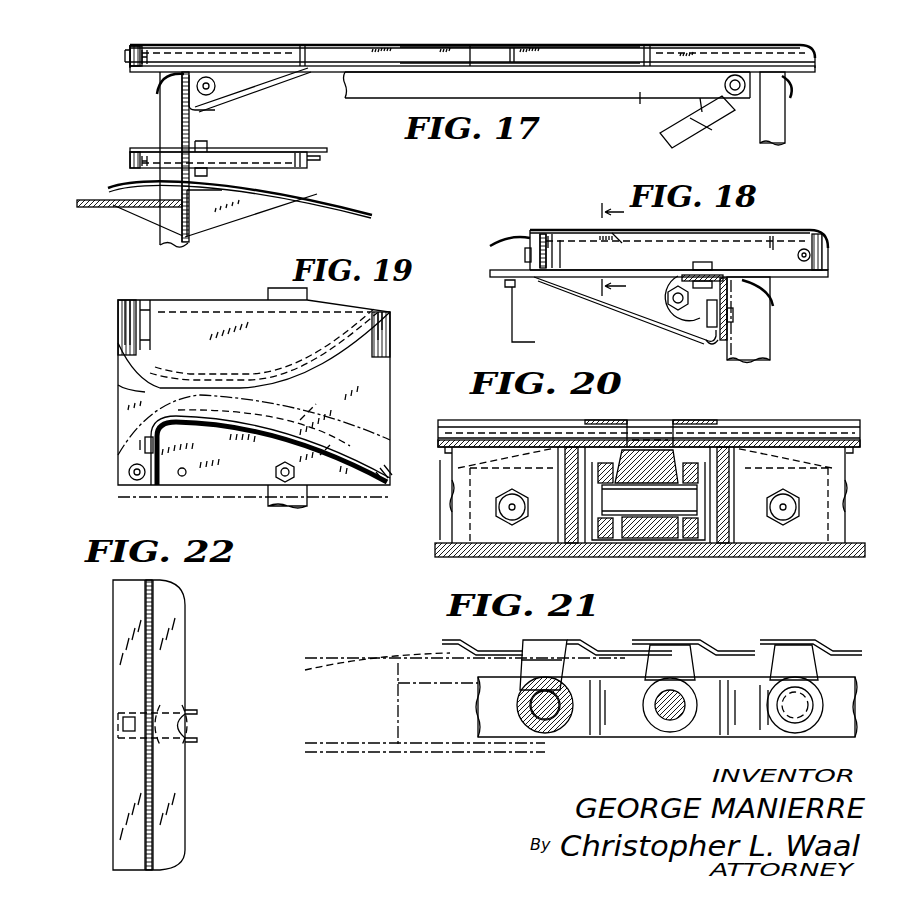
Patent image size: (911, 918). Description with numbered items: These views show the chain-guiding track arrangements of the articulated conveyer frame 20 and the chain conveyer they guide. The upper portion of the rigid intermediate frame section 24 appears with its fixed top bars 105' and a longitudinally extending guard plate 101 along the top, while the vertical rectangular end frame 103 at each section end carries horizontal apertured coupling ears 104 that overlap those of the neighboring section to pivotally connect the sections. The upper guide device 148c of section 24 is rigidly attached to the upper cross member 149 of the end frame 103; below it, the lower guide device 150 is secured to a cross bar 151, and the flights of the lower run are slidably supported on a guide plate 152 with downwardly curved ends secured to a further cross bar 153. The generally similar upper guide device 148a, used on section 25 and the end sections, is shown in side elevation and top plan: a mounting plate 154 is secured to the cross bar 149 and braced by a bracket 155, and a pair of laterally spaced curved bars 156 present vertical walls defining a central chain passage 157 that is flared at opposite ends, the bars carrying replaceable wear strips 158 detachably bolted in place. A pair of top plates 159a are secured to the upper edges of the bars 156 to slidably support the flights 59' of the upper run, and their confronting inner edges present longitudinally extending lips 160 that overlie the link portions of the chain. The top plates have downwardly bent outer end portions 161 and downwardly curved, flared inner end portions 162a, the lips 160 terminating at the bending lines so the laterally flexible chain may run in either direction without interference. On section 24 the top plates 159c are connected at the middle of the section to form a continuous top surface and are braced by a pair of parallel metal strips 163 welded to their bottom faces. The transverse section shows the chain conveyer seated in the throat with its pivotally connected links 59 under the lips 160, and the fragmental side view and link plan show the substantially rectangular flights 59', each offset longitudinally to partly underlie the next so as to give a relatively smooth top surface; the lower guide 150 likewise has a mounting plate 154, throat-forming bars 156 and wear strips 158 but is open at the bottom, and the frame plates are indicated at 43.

In FIG. 17, the guide device 148c is at (232, 50).
In FIG. 18, the guide device 148a is at (745, 238).
In FIG. 19, the guide device 148a is at (268, 294).
In FIG. 20, the guide device 148a is at (440, 500).
In FIG. 21, the guide device 148a is at (400, 752).
In FIG. 17, the upper cross member 149 is at (165, 92).
In FIG. 18, the upper cross member 149 is at (722, 345).
In FIG. 19, the upper cross member 149 is at (300, 500).
In FIG. 17, the lower guide device 150 is at (245, 158).
In FIG. 17, the cross bar 151 is at (160, 125).
In FIG. 17, the guide plate 152 is at (325, 197).
In FIG. 17, the cross bar 153 is at (200, 212).
In FIG. 17, the mounting plate 154 is at (115, 68).
In FIG. 18, the mounting plate 154 is at (795, 278).
In FIG. 19, the mounting plate 154 is at (252, 480).
In FIG. 20, the mounting plate 154 is at (442, 557).
In FIG. 17, the bracket 155 is at (280, 86).
In FIG. 18, the bracket 155 is at (615, 313).
In FIG. 17, the curved bar 156 is at (148, 48).
In FIG. 18, the curved bar 156 is at (580, 248).
In FIG. 19, the curved bar 156 is at (378, 484).
In FIG. 20, the curved bar 156 is at (568, 530).
In FIG. 19, the chain passage 157 is at (145, 391).
In FIG. 20, the chain passage 157 is at (725, 432).
In FIG. 17, the wear strip 158 is at (322, 158).
In FIG. 18, the wear strip 158 is at (525, 255).
In FIG. 19, the wear strip 158 is at (150, 437).
In FIG. 20, the wear strip 158 is at (570, 480).
In FIG. 18, the top plate 159a is at (540, 240).
In FIG. 19, the top plate 159a is at (195, 328).
In FIG. 20, the top plate 159a is at (790, 432).
In FIG. 21, the top plate 159a is at (405, 658).
In FIG. 17, the top plate 159c is at (478, 32).
In FIG. 19, the lip 160 is at (290, 378).
In FIG. 20, the lip 160 is at (612, 440).
In FIG. 17, the outer end portion 161 is at (135, 50).
In FIG. 18, the outer end portion 161 is at (818, 238).
In FIG. 19, the outer end portion 161 is at (370, 312).
In FIG. 18, the inner end portion 162a is at (530, 238).
In FIG. 19, the inner end portion 162a is at (130, 322).
In FIG. 17, the metal strip 163 is at (514, 48).
In FIG. 17, the guard plate 101 is at (795, 80).
In FIG. 17, the end frame 103 is at (165, 240).
In FIG. 17, the coupling ear 104 is at (110, 207).
In FIG. 17, the fixed top bar 105' is at (547, 105).
In FIG. 17, the intermediate frame section 24 is at (808, 110).
In FIG. 18, the intermediate frame section 25 is at (780, 330).
In FIG. 18, the block 43 is at (512, 313).
In FIG. 18, the articulated conveyer frame 20 is at (598, 247).
In FIG. 20, the chain conveyer link 59 is at (648, 524).
In FIG. 21, the chain conveyer link 59 is at (670, 729).
In FIG. 22, the chain conveyer link 59 is at (176, 713).
In FIG. 20, the flight 59' is at (652, 421).
In FIG. 21, the flight 59' is at (669, 644).
In FIG. 22, the flight 59' is at (177, 725).